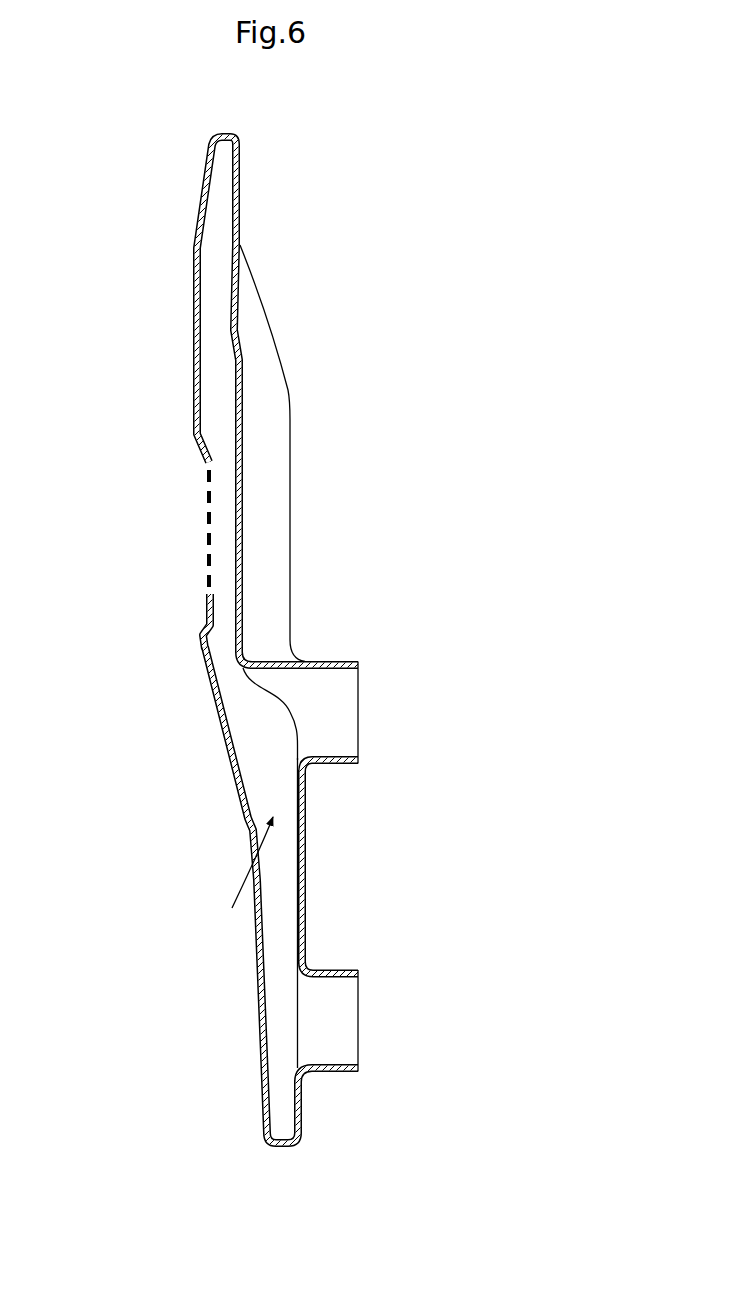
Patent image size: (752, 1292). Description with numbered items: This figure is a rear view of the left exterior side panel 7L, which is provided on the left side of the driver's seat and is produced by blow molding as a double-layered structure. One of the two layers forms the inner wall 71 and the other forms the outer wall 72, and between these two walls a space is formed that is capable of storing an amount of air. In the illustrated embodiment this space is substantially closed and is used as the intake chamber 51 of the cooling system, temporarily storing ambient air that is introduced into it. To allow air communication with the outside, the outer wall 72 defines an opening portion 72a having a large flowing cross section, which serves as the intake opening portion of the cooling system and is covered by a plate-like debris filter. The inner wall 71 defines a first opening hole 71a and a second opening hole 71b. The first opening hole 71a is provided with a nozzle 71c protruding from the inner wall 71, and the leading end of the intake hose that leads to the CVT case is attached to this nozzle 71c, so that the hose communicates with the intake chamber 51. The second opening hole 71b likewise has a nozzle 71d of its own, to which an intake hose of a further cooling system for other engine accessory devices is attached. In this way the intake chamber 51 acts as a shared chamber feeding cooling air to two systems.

The left exterior side panel 7L is at (293, 640).
The inner wall 71 is at (286, 640).
The first opening hole 71a is at (277, 717).
The second opening hole 71b is at (290, 1018).
The nozzle 71c is at (348, 660).
The nozzle 71d is at (350, 971).
The outer wall 72 is at (193, 282).
The opening portion 72a is at (208, 592).
The intake chamber 51 is at (228, 885).